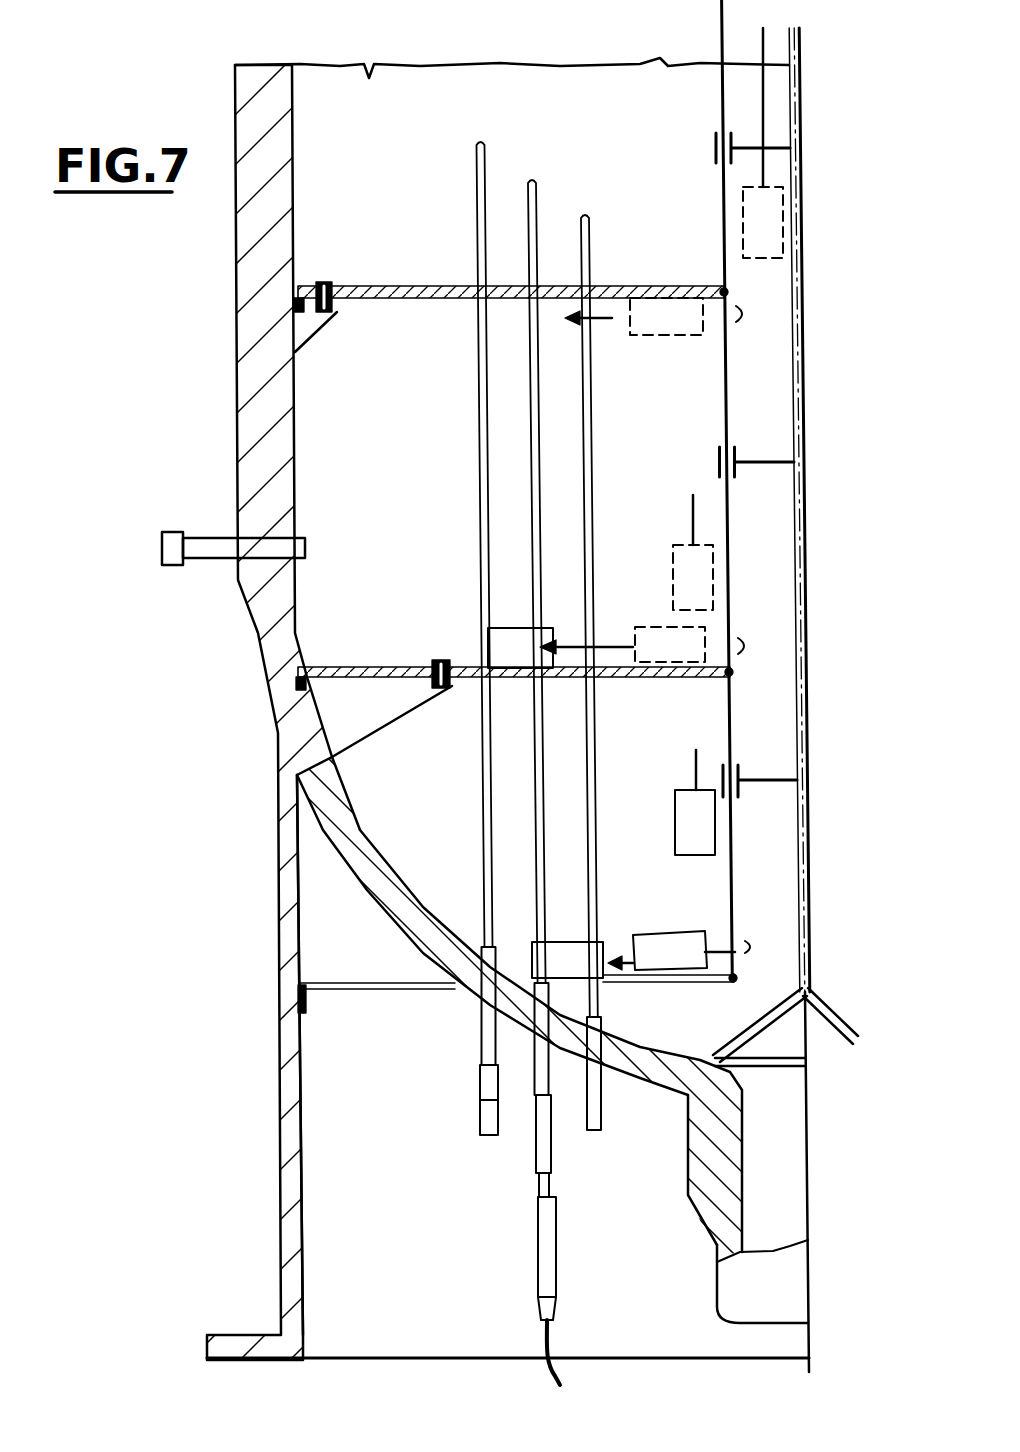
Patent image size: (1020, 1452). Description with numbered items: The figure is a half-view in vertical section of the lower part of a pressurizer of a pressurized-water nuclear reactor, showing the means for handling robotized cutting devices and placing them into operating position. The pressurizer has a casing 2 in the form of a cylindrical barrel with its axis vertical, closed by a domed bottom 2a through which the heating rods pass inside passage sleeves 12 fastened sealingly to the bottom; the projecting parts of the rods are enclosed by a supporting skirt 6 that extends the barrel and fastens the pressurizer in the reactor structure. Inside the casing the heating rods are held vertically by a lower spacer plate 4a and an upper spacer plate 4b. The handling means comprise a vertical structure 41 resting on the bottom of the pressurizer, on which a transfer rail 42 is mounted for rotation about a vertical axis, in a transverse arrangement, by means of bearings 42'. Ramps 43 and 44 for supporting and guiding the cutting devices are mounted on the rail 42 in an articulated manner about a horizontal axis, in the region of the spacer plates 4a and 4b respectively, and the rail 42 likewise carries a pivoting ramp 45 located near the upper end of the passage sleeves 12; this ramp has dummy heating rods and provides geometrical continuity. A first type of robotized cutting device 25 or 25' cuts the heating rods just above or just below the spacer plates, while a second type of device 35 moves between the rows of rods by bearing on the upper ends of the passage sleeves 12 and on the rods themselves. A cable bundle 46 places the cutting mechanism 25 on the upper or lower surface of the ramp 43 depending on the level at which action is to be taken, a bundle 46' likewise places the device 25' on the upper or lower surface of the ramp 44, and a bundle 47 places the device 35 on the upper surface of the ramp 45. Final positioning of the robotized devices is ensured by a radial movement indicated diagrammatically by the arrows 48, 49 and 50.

The casing 2 is at (245, 333).
The domed bottom 2a is at (330, 815).
The lower spacer plate 4a is at (378, 668).
The upper spacer plate 4b is at (378, 289).
The supporting skirt 6 is at (292, 1000).
The passage sleeves 12 is at (595, 1086).
The robotized cutting device 25 is at (611, 480).
The robotized cutting device 25' is at (808, 223).
The robotized cutting device 35 is at (684, 832).
The vertical structure 41 is at (797, 177).
The transfer rail 42 is at (726, 488).
The bearings 42' is at (719, 133).
The ramp 43 is at (712, 674).
The ramp 44 is at (715, 290).
The pivoting ramp 45 is at (717, 982).
The cable bundle 46 is at (670, 545).
The cable bundle 46' is at (815, 107).
The cable bundle 47 is at (693, 771).
The arrow 48 is at (612, 318).
The arrow 49 is at (617, 644).
The arrow 50 is at (624, 960).